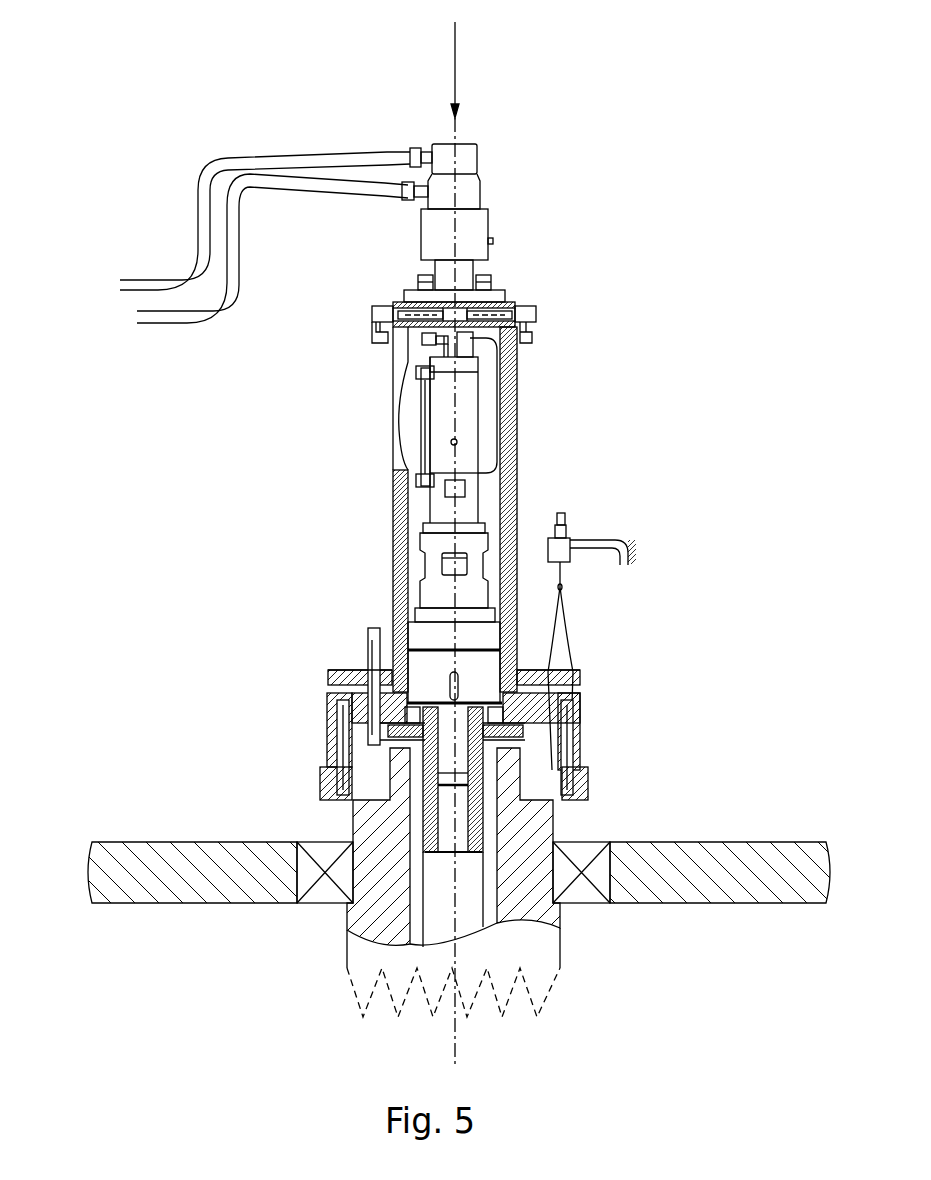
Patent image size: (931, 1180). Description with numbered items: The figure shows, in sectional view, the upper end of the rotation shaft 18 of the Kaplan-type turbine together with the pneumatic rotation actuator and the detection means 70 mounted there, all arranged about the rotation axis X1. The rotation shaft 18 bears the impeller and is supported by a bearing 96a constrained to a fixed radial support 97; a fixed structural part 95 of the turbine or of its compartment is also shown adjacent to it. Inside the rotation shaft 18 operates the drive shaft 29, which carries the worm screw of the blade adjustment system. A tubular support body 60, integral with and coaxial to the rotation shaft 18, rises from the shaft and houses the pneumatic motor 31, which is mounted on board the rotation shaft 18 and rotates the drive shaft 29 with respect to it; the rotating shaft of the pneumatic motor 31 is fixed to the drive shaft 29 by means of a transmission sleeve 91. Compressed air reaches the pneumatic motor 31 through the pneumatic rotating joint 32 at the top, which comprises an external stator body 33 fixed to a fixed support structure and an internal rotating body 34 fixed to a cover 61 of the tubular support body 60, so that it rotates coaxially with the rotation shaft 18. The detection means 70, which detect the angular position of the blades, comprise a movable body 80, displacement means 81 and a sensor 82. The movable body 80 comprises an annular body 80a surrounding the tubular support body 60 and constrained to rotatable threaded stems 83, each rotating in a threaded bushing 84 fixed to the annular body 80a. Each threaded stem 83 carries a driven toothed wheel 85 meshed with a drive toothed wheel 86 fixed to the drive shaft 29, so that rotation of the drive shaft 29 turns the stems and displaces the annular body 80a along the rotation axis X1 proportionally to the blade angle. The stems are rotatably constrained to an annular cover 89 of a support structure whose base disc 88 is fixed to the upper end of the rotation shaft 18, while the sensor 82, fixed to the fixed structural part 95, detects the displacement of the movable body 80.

The pneumatic rotating joint 32 is at (473, 63).
The external stator body 33 is at (465, 190).
The internal rotating body 34 is at (460, 275).
The cover 61 is at (505, 300).
The tubular support body 60 is at (517, 467).
The pneumatic motor 31 is at (478, 410).
The sensor 82 is at (560, 557).
The detection means 70 is at (185, 595).
The rotatable threaded stem 83 is at (372, 630).
The movable body 80 is at (425, 685).
The annular body 80a is at (582, 675).
The threaded bushing 84 is at (328, 672).
The displacement means 81 is at (322, 690).
The annular cover 89 is at (327, 718).
The driven toothed wheel 85 is at (327, 737).
The drive toothed wheel 86 is at (525, 730).
The base disc 88 is at (320, 793).
The transmission sleeve 91 is at (490, 812).
The bearing 96a is at (580, 865).
The fixed structural part 95 is at (720, 875).
The fixed radial support 97 is at (140, 895).
The rotation shaft 18 is at (345, 935).
The drive shaft 29 is at (440, 927).
The rotation axis X1 is at (455, 1045).